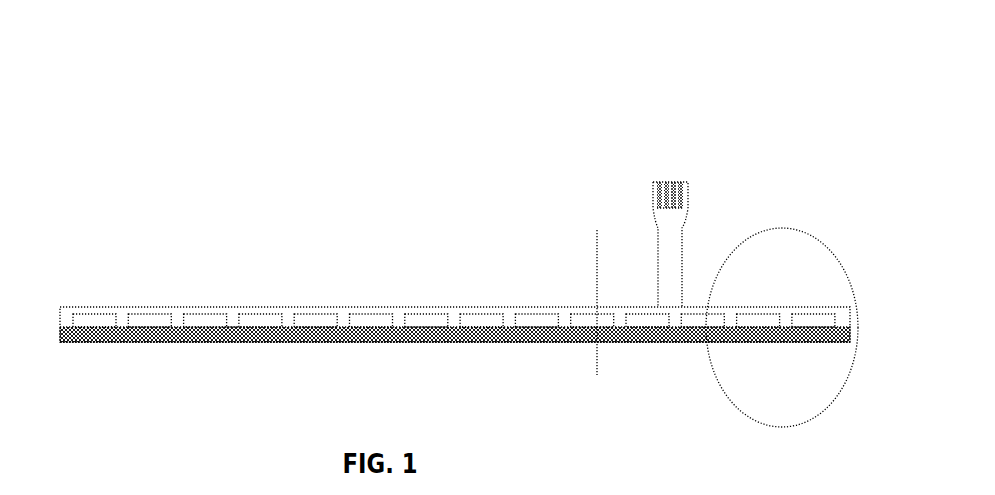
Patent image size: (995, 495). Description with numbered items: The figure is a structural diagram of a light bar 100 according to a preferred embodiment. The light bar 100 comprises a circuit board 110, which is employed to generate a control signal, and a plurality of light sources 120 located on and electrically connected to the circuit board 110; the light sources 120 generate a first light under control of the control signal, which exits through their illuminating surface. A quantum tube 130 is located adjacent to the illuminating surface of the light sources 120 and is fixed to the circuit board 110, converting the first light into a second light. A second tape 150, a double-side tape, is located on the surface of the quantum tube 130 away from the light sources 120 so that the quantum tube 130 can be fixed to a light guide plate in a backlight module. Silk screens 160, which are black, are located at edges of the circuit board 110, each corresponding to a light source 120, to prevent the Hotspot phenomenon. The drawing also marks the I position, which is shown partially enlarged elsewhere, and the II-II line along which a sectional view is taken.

The light bar 100 is at (472, 53).
The circuit board 110 is at (455, 305).
The light sources 120 is at (454, 296).
The quantum tube 130 is at (194, 303).
The second tape 150 is at (455, 351).
The silk screens 160 is at (455, 358).
The I position I is at (756, 327).
The II-II line II is at (597, 237).